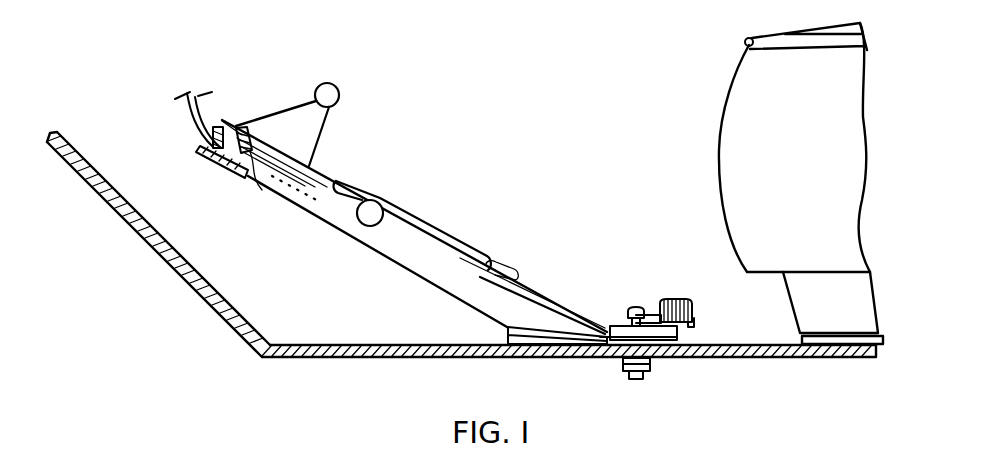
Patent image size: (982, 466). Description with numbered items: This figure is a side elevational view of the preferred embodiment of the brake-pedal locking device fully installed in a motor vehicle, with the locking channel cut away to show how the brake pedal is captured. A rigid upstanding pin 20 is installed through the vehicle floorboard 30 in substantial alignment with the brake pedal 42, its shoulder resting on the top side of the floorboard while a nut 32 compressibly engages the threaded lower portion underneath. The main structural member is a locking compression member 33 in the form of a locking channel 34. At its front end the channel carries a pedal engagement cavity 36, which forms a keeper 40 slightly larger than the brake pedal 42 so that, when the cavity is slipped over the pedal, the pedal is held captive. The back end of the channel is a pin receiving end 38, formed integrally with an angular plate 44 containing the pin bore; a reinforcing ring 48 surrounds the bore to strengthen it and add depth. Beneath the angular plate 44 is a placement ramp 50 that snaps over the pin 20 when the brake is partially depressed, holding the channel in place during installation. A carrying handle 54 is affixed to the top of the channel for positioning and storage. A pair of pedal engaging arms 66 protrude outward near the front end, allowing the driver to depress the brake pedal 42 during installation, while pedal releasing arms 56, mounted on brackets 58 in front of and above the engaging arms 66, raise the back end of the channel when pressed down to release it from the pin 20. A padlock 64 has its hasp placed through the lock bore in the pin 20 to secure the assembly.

The rigid upstanding pin 20 is at (644, 307).
The vehicle floorboard 30 is at (218, 322).
The nut 32 is at (646, 365).
The locking compression member 33 is at (414, 226).
The locking channel 34 is at (320, 166).
The pedal engagement cavity 36 is at (232, 127).
The pin receiving end 38 is at (600, 325).
The keeper 40 is at (220, 168).
The brake pedal 42 is at (192, 128).
The angular plate 44 is at (508, 336).
The reinforcing ring 48 is at (678, 345).
The placement ramp 50 is at (569, 372).
The carrying handle 54 is at (462, 234).
The pedal releasing arms 56 is at (398, 66).
The brackets 58 is at (298, 90).
The padlock 64 is at (724, 262).
The pedal engaging arms 66 is at (368, 220).